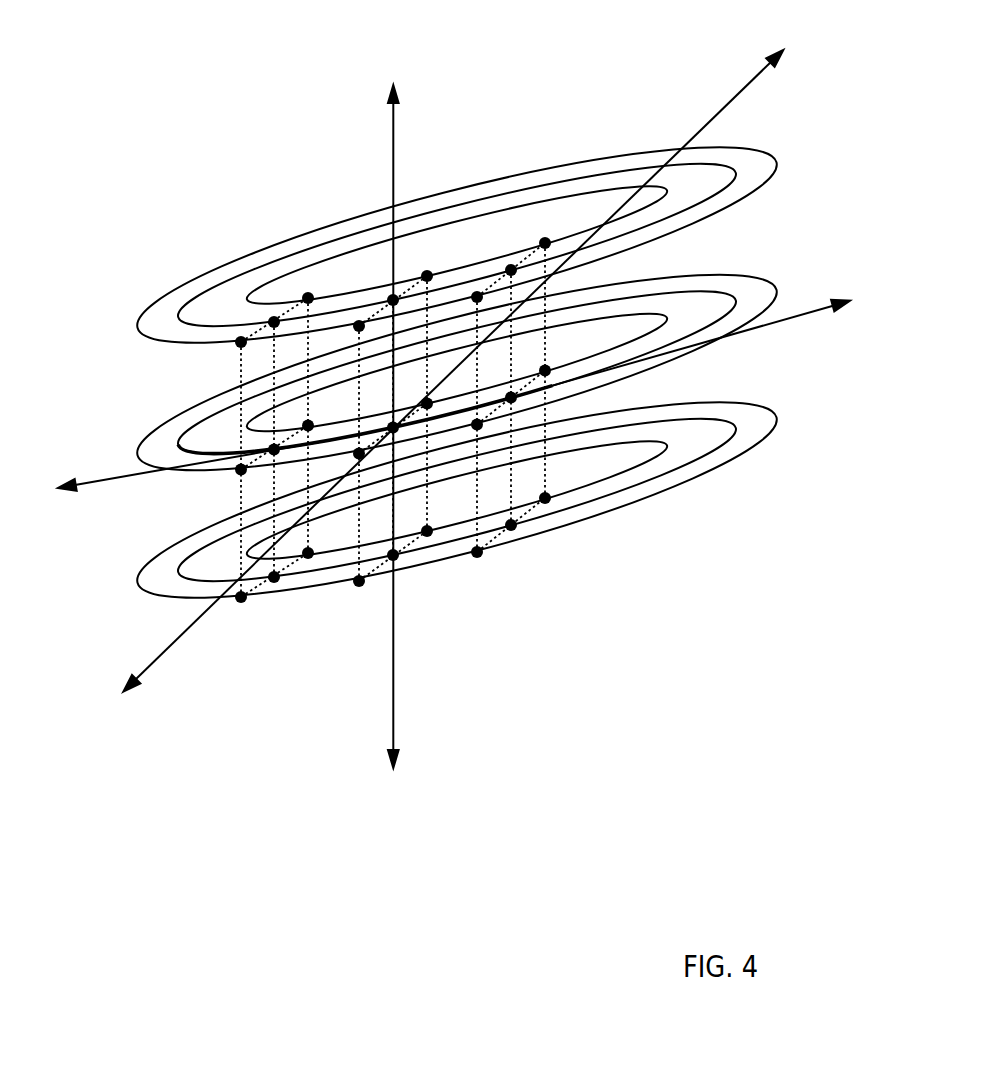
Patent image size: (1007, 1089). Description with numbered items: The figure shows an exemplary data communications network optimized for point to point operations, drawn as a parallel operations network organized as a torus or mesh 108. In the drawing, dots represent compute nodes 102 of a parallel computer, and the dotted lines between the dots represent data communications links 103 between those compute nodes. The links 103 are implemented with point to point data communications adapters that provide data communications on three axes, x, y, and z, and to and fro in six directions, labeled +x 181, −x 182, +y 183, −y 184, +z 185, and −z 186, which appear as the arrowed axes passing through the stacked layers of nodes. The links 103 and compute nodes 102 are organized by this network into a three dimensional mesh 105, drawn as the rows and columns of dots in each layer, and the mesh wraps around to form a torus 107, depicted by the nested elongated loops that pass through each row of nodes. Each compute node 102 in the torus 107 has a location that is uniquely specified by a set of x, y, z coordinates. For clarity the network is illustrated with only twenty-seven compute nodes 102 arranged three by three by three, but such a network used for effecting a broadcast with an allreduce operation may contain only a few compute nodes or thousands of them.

The compute nodes 102 is at (477, 554).
The data communications links 103 is at (242, 368).
The three dimensional mesh 105 is at (308, 296).
The torus 107 is at (220, 245).
The parallel operations network 108 is at (457, 519).
The +x direction 181 is at (858, 329).
The −x direction 182 is at (174, 484).
The +y direction 183 is at (828, 76).
The −y direction 184 is at (120, 737).
The +z direction 185 is at (410, 76).
The −z direction 186 is at (412, 829).